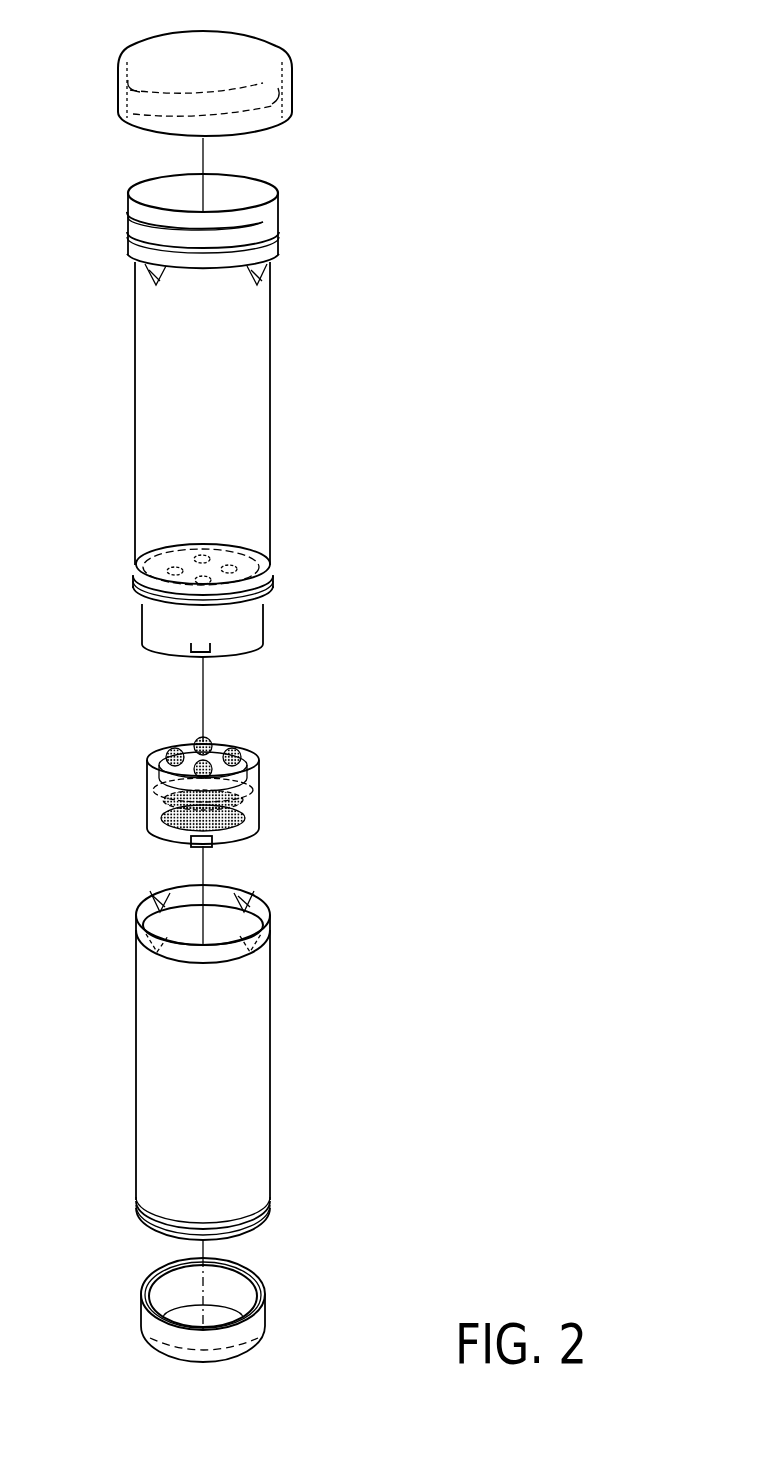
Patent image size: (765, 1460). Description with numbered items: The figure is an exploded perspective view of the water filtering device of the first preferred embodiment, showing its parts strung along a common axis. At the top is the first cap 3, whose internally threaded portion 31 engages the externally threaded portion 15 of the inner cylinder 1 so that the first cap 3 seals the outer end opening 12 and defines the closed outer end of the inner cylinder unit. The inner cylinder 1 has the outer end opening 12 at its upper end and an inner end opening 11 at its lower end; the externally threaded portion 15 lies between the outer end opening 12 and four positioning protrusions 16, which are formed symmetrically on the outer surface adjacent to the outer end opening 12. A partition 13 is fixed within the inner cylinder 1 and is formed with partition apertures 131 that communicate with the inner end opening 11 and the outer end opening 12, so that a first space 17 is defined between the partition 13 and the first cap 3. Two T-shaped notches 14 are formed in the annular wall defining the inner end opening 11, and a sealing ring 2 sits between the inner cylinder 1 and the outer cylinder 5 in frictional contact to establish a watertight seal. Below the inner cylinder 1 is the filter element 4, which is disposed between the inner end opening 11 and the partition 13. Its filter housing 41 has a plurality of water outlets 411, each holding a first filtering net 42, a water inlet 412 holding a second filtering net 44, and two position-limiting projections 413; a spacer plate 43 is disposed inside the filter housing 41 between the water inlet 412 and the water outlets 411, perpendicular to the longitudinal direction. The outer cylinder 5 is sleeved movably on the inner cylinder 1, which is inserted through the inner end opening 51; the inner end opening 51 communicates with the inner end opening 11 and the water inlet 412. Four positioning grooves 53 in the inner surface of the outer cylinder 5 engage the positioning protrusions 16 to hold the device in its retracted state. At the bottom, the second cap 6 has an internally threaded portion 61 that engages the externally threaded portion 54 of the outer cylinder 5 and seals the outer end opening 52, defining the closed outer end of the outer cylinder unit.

The inner cylinder 1 is at (256, 410).
The inner end opening 11 is at (250, 658).
The outer end opening 12 is at (245, 190).
The partition 13 is at (160, 566).
The partition apertures 131 is at (237, 567).
The T-shaped notches 14 is at (186, 650).
The externally threaded portion 15 is at (128, 232).
The positioning protrusions 16 is at (157, 280).
The first space 17 is at (172, 410).
The sealing ring 2 is at (276, 587).
The first cap 3 is at (312, 48).
The internally threaded portion 31 is at (130, 108).
The filter element 4 is at (207, 770).
The filter housing 41 is at (152, 800).
The water outlets 411 is at (150, 781).
The water inlet 412 is at (262, 808).
The position-limiting projections 413 is at (212, 841).
The first filtering nets 42 is at (178, 750).
The spacer plate 43 is at (258, 778).
The second filtering net 44 is at (170, 837).
The outer cylinder 5 is at (202, 1072).
The inner end opening 51 is at (273, 908).
The outer end opening 52 is at (152, 1240).
The positioning grooves 53 is at (156, 902).
The externally threaded portion 54 is at (264, 1218).
The second cap 6 is at (192, 1303).
The internally threaded portion 61 is at (266, 1266).